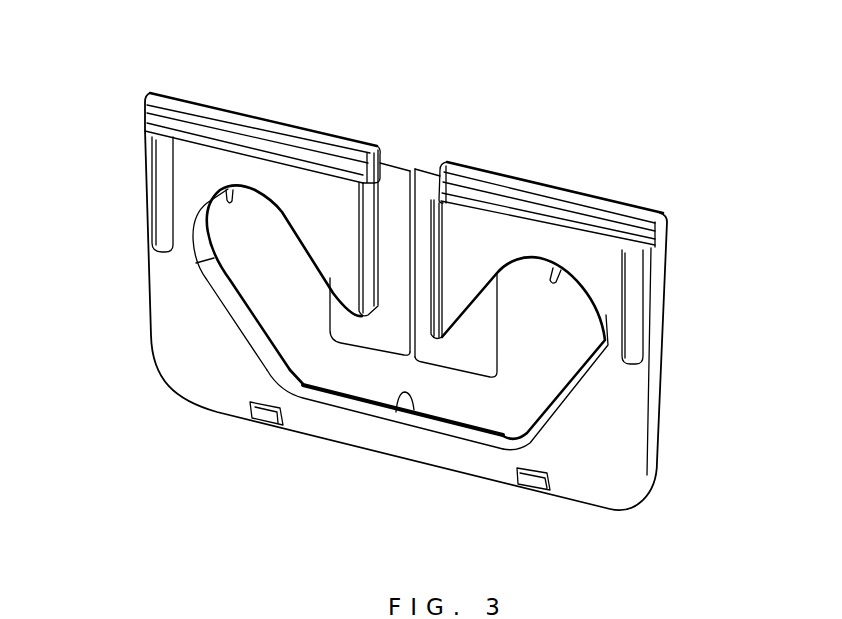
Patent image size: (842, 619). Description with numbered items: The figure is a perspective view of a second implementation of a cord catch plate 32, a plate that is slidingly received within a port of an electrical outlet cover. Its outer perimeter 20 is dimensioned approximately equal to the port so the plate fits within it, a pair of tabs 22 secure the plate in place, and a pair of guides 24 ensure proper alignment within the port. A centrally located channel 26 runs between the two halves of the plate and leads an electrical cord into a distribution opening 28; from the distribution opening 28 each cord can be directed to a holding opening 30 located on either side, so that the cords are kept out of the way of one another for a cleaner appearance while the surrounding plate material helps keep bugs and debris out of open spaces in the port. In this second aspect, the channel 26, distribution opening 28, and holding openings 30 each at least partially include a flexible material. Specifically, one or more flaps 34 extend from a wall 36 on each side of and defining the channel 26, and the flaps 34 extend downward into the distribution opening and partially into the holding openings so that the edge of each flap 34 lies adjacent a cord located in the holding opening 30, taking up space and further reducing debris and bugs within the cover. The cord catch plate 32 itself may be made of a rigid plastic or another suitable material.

The outer perimeter 20 is at (148, 330).
The tabs 22 is at (268, 413).
The guides 24 is at (160, 190).
The channel 26 is at (377, 148).
The distribution opening 28 is at (409, 412).
The holding opening 30 is at (232, 190).
The cord catch plate 32 is at (393, 298).
The flaps 34 is at (393, 188).
The wall 36 is at (318, 183).